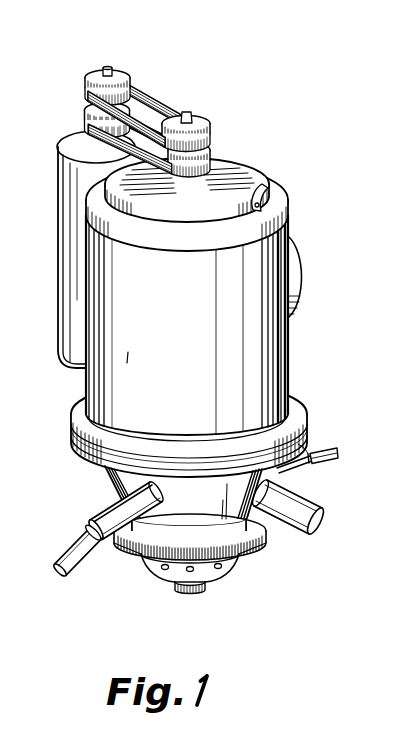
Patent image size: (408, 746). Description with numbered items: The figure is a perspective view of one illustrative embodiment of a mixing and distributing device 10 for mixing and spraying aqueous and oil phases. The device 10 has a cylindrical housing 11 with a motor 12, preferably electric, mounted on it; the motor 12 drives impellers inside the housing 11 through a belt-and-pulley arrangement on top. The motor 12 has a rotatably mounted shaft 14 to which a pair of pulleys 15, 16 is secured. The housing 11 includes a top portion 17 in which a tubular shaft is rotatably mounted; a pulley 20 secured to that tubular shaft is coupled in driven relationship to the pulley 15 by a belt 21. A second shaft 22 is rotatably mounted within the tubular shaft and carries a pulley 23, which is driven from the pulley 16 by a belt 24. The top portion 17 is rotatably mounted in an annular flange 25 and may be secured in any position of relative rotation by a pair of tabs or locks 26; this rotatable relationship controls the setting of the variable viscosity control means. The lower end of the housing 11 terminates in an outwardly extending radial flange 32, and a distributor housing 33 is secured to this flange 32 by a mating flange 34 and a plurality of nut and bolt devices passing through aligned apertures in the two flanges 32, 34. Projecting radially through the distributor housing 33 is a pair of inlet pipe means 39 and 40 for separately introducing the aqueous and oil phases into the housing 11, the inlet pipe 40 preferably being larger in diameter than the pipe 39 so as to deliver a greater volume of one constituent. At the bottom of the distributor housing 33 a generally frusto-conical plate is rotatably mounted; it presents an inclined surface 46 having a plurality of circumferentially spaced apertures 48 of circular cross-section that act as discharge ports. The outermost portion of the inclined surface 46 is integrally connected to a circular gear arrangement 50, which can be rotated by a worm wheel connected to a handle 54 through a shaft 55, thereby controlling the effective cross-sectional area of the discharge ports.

The mixing and distributing device 10 is at (128, 357).
The housing 11 is at (290, 350).
The motor 12 is at (59, 263).
The shaft 14 is at (107, 67).
The pulley 15 is at (86, 108).
The pulley 16 is at (98, 74).
The top portion 17 is at (233, 163).
The pulley 20 is at (210, 152).
The belt 21 is at (113, 141).
The shaft 22 is at (192, 112).
The pulley 23 is at (210, 122).
The belt 24 is at (168, 98).
The annular flange 25 is at (289, 198).
The tabs or locks 26 is at (267, 181).
The radial flange 32 is at (297, 410).
The distributor housing 33 is at (115, 484).
The mating flange 34 is at (310, 448).
The inlet pipe means 39 is at (58, 562).
The inlet pipe 40 is at (322, 521).
The inclined surface 46 is at (232, 573).
The apertures 48 is at (164, 571).
The circular gear arrangement 50 is at (264, 543).
The handle 54 is at (337, 457).
The shaft 55 is at (300, 473).